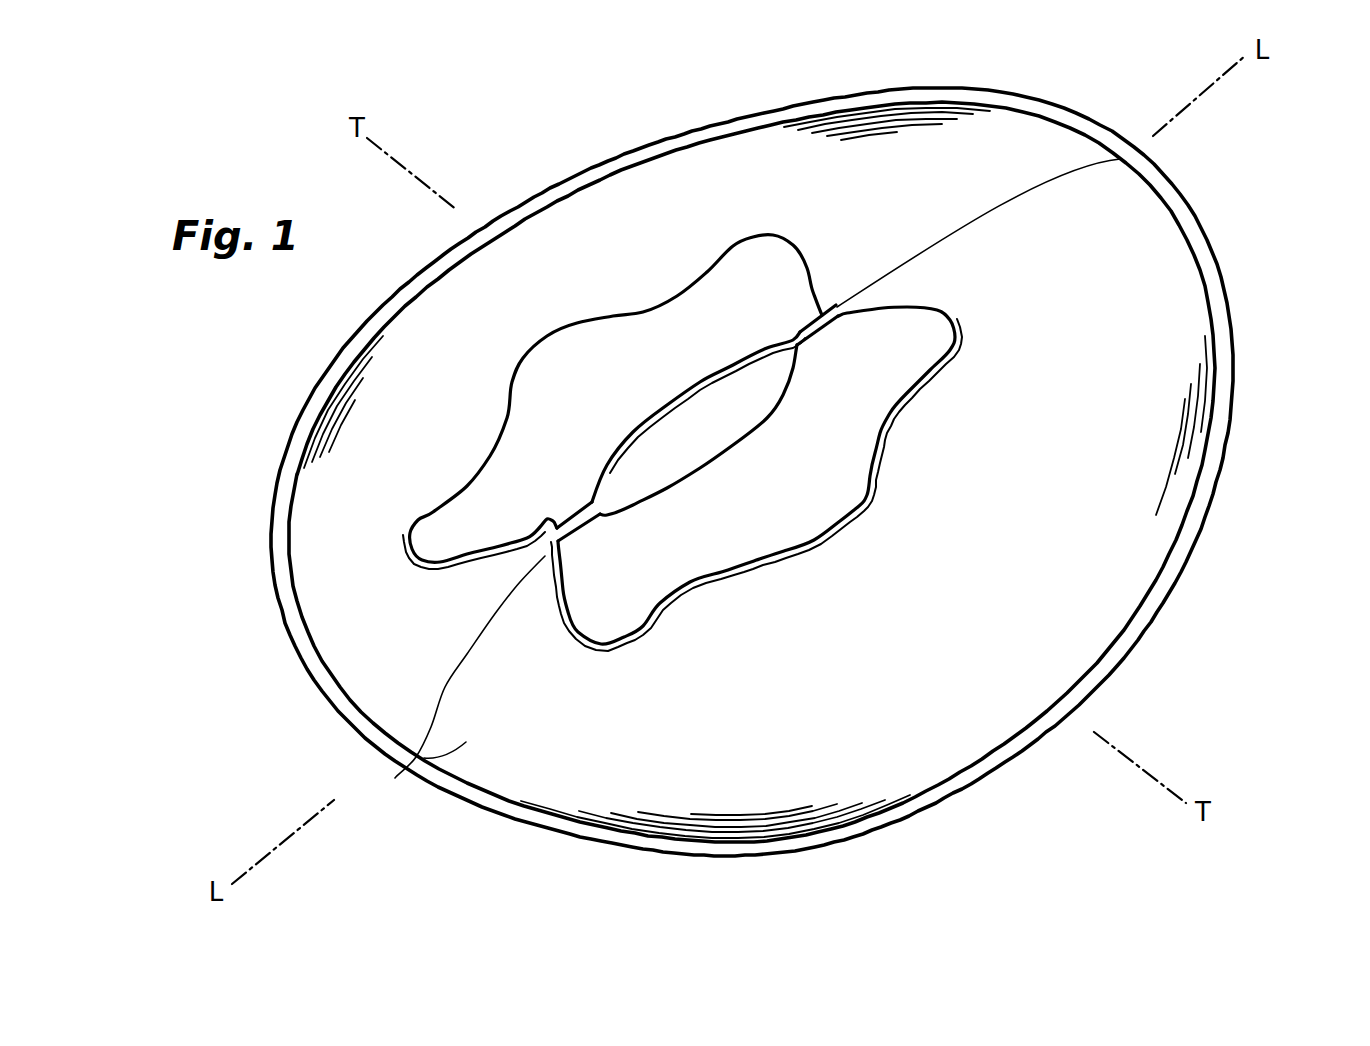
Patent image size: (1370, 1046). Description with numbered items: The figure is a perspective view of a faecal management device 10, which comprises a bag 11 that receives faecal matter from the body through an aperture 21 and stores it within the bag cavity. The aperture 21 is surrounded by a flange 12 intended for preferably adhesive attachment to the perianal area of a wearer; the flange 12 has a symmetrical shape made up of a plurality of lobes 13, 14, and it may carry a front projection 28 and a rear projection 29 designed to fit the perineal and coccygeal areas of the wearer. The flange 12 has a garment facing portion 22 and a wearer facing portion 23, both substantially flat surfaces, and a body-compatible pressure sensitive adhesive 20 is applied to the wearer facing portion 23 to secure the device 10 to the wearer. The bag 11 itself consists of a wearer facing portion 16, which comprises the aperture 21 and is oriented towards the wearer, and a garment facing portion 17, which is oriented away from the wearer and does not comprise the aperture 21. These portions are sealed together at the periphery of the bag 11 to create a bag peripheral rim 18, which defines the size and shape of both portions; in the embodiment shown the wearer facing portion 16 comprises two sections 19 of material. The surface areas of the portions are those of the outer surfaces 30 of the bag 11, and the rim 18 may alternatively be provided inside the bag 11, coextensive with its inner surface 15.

The faecal management device 10 is at (1227, 242).
The bag 11 is at (1117, 590).
The flange 12 is at (507, 497).
The lobe 13 is at (820, 505).
The lobe 14 is at (432, 528).
The inner surface 15 is at (717, 440).
The wearer facing portion 16 is at (720, 227).
The garment facing portion 17 is at (600, 240).
The bag peripheral rim 18 is at (1228, 427).
The sections 19 is at (409, 687).
The pressure sensitive adhesive 20 is at (620, 537).
The aperture 21 is at (637, 445).
The garment facing portion of the flange 22 is at (855, 392).
The wearer facing portion of the flange 23 is at (888, 347).
The front projection 28 is at (547, 552).
The rear projection 29 is at (817, 312).
The outer surface 30 is at (927, 755).